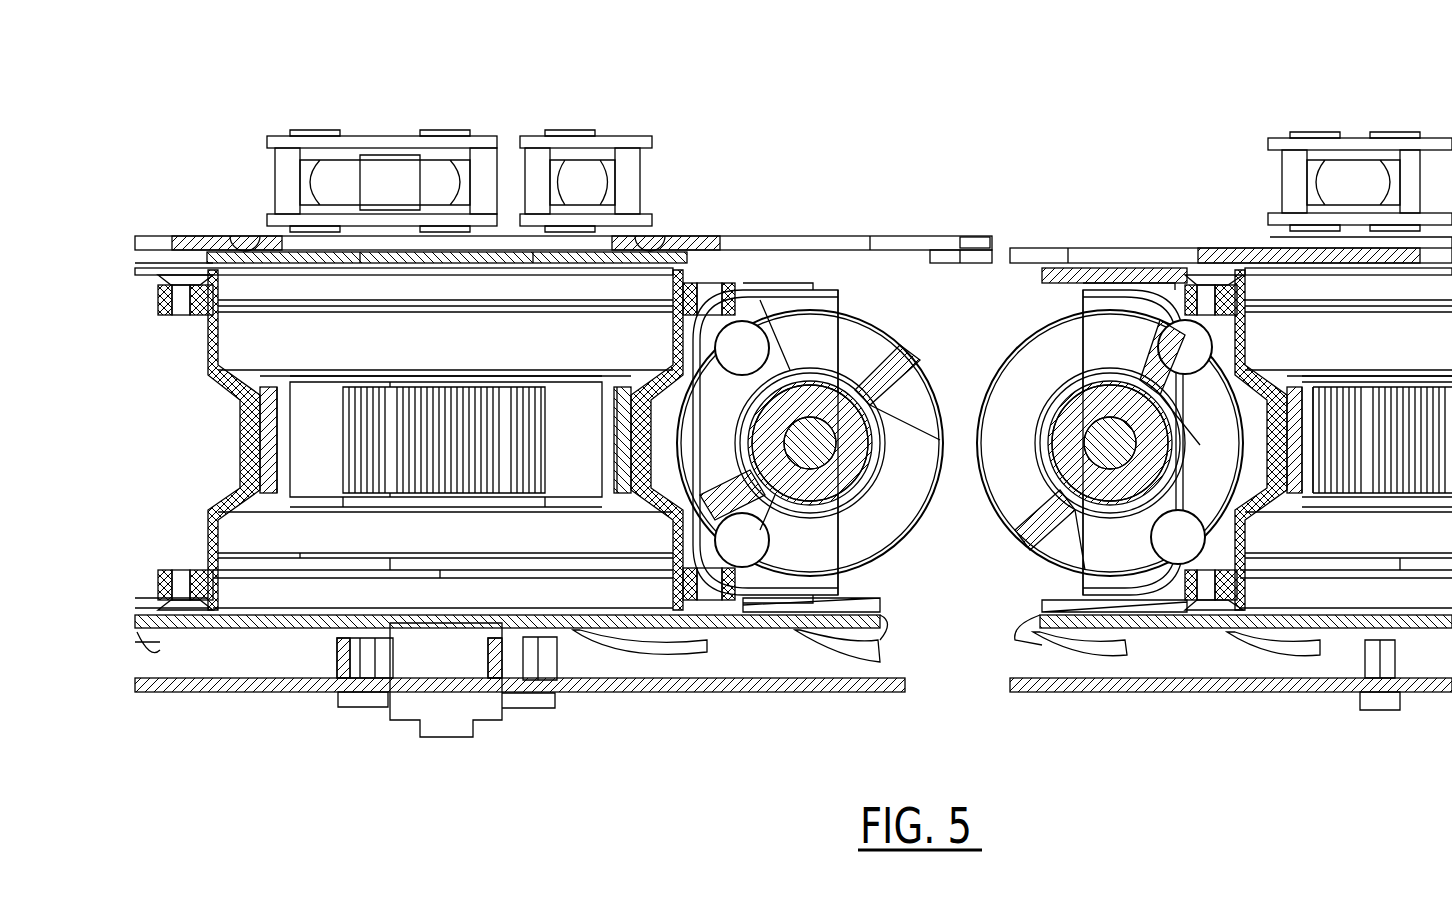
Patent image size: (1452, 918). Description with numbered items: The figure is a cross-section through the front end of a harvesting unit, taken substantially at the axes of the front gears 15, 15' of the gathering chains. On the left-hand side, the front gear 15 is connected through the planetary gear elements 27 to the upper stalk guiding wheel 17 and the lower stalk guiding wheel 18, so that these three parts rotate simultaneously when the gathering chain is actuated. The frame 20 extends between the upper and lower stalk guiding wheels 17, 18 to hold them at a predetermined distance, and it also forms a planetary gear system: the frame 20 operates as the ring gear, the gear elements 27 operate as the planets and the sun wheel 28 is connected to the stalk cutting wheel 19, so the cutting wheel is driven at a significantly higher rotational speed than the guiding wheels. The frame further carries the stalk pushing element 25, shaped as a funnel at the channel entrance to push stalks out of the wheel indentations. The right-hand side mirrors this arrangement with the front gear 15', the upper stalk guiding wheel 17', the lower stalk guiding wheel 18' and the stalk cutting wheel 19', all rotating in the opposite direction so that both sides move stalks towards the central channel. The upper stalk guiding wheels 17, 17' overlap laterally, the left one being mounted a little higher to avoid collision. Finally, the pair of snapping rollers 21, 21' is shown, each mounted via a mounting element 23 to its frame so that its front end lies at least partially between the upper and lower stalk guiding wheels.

The front gear 15 is at (459, 151).
The front gear 15' is at (1360, 147).
The upper stalk guiding wheel 17 is at (563, 206).
The upper stalk guiding wheel 17' is at (1206, 210).
The lower stalk guiding wheel 18 is at (545, 676).
The lower stalk guiding wheel 18' is at (1233, 662).
The stalk cutting wheel 19 is at (520, 712).
The stalk cutting wheel 19' is at (1231, 712).
The frame 20 is at (258, 445).
The snapping roller 21 is at (815, 442).
The snapping roller 21' is at (1110, 442).
The mounting element 23 is at (833, 303).
The stalk pushing element 25 is at (857, 605).
The planetary gear elements 27 is at (352, 405).
The sun wheel 28 is at (390, 475).